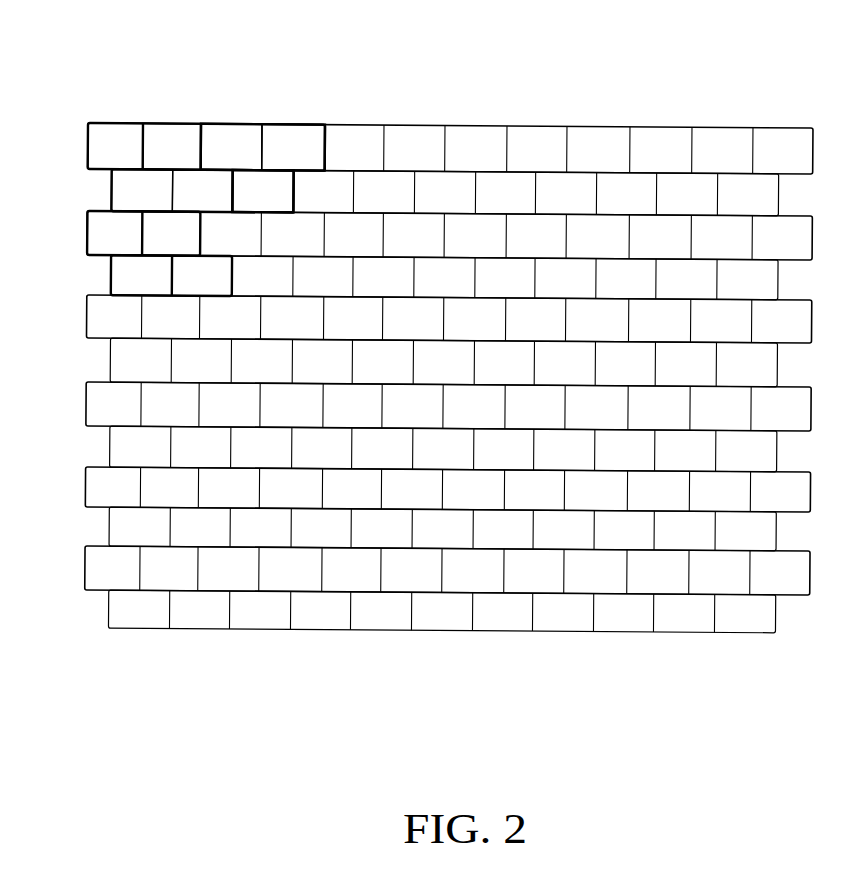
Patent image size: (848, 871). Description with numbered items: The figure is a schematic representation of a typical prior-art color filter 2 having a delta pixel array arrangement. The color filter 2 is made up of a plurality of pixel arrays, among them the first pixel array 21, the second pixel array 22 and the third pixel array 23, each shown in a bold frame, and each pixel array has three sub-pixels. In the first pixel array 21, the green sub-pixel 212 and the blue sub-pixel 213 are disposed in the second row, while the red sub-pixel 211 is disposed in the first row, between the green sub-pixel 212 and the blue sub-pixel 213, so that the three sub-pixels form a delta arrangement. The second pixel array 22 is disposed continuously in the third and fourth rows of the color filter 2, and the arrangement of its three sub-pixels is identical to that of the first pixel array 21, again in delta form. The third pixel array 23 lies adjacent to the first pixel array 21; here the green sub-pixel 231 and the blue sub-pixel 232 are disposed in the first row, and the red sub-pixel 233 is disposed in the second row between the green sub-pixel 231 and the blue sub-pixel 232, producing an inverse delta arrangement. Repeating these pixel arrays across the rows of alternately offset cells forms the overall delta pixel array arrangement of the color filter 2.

The color filter 2 is at (668, 80).
The first pixel array 21 is at (150, 102).
The red sub-pixel 211 is at (192, 127).
The green sub-pixel 212 is at (124, 180).
The blue sub-pixel 213 is at (177, 202).
The second pixel array 22 is at (102, 275).
The third pixel array 23 is at (338, 117).
The green sub-pixel 231 is at (217, 140).
The blue sub-pixel 232 is at (317, 133).
The red sub-pixel 233 is at (277, 122).